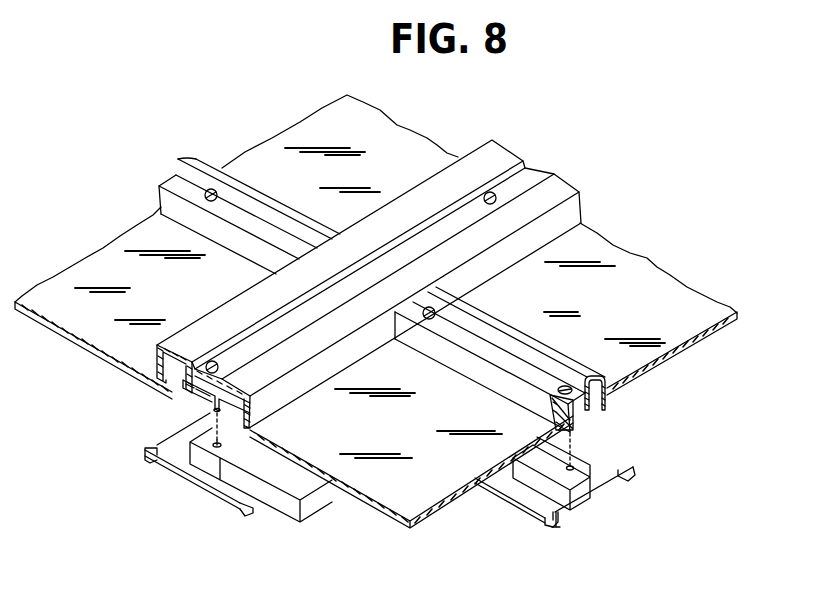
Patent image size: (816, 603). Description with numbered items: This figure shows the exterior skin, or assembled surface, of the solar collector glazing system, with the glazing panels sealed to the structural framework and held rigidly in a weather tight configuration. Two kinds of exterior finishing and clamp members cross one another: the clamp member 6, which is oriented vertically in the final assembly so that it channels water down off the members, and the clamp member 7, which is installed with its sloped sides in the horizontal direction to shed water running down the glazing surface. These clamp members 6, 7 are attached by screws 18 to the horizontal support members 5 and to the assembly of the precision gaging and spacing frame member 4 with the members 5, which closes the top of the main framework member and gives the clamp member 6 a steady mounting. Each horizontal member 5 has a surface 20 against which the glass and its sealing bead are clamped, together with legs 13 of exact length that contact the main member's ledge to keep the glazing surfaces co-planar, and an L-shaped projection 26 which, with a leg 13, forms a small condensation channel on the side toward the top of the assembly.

The precision gaging and spacing frame member 4 is at (200, 396).
The horizontal support member 5 is at (207, 470).
The exterior clamp cross sectional member 6 is at (505, 153).
The exterior clamp cross sectional member 7 is at (217, 162).
The vertical wall 13 is at (553, 512).
The screw 18 is at (200, 190).
The surface 20 is at (265, 487).
The L-shaped projection 26 is at (143, 456).